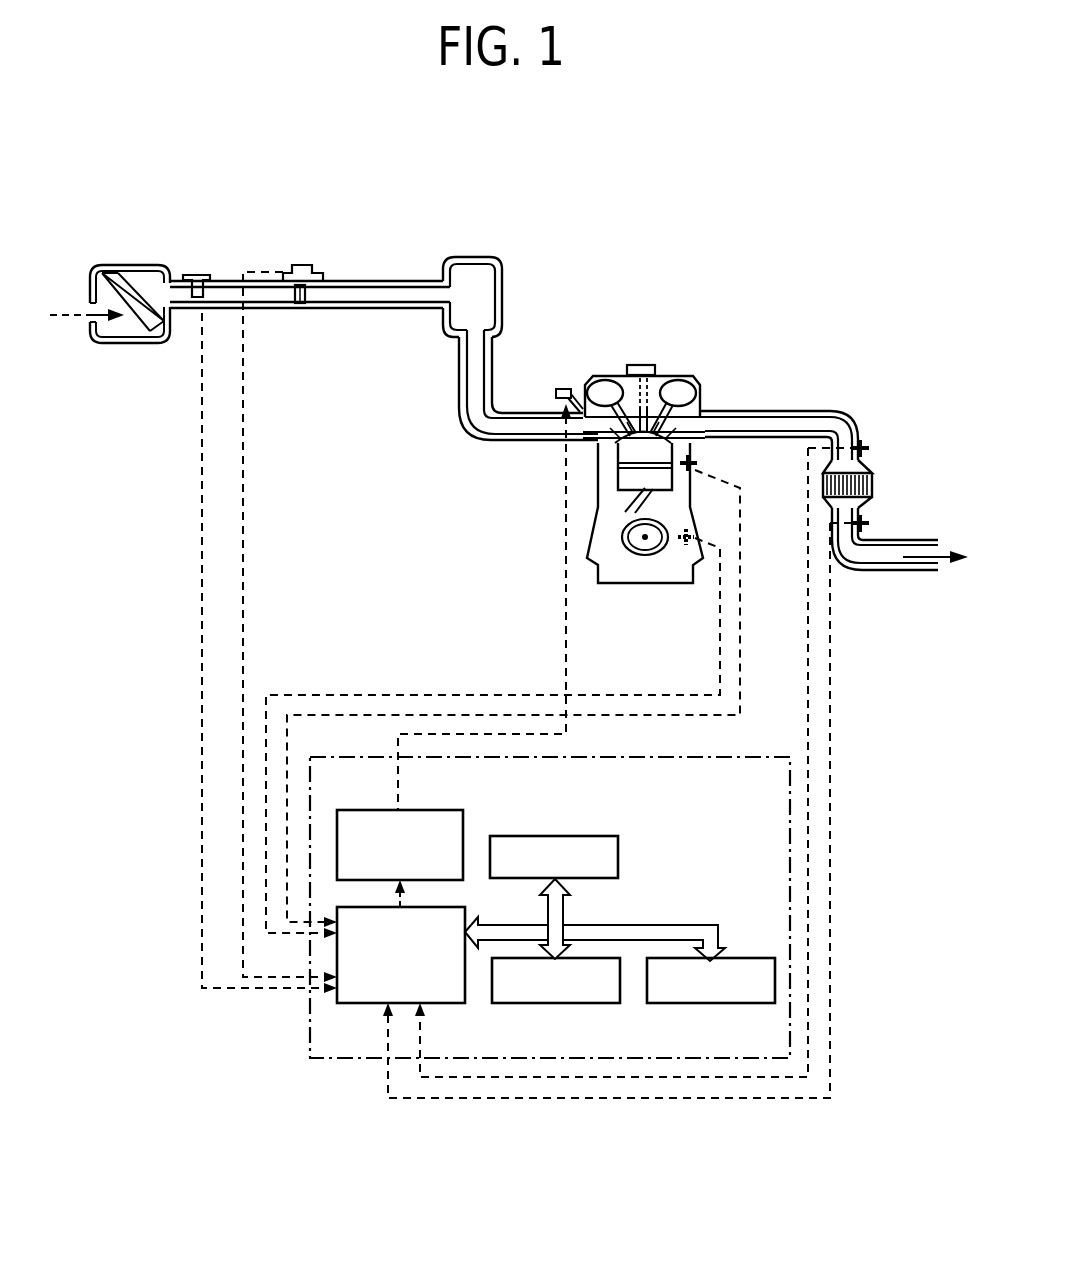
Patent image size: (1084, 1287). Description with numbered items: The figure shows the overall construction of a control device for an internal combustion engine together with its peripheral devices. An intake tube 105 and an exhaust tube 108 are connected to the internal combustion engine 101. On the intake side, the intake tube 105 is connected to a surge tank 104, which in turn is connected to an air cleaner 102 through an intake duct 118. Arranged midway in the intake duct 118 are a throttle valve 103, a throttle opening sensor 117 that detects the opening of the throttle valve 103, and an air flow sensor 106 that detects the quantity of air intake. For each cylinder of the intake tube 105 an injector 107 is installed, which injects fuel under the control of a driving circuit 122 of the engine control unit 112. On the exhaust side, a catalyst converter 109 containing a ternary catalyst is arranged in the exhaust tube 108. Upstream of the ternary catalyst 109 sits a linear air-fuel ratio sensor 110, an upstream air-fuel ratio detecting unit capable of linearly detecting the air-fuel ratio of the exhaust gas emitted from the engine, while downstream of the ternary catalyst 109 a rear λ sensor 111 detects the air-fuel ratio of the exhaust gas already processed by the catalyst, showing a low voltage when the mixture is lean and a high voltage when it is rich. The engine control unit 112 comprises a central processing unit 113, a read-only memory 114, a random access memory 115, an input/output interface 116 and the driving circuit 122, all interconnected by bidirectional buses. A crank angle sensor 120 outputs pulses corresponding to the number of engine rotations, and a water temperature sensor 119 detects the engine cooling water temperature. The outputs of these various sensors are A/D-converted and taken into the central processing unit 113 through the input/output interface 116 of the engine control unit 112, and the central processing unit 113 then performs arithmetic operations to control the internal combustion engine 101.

The internal combustion engine 101 is at (647, 585).
The air cleaner 102 is at (133, 265).
The throttle valve 103 is at (306, 292).
The surge tank 104 is at (471, 257).
The intake tube 105 is at (485, 443).
The air flow sensor 106 is at (198, 275).
The injector 107 is at (563, 389).
The exhaust tube 108 is at (782, 411).
The catalyst converter (ternary catalyst) 109 is at (873, 486).
The linear air-fuel ratio sensor 110 is at (870, 450).
The rear λ sensor 111 is at (870, 525).
The engine control unit (ECU) 112 is at (757, 757).
The central processing unit (CPU) 113 is at (592, 836).
The read-only memory (ROM) 114 is at (745, 1003).
The random access memory (RAM) 115 is at (590, 1003).
The input/output interface 116 is at (452, 1003).
The throttle opening sensor 117 is at (302, 265).
The intake duct 118 is at (343, 308).
The water temperature sensor 119 is at (698, 464).
The crank angle sensor 120 is at (696, 536).
The driving circuit 122 is at (440, 810).